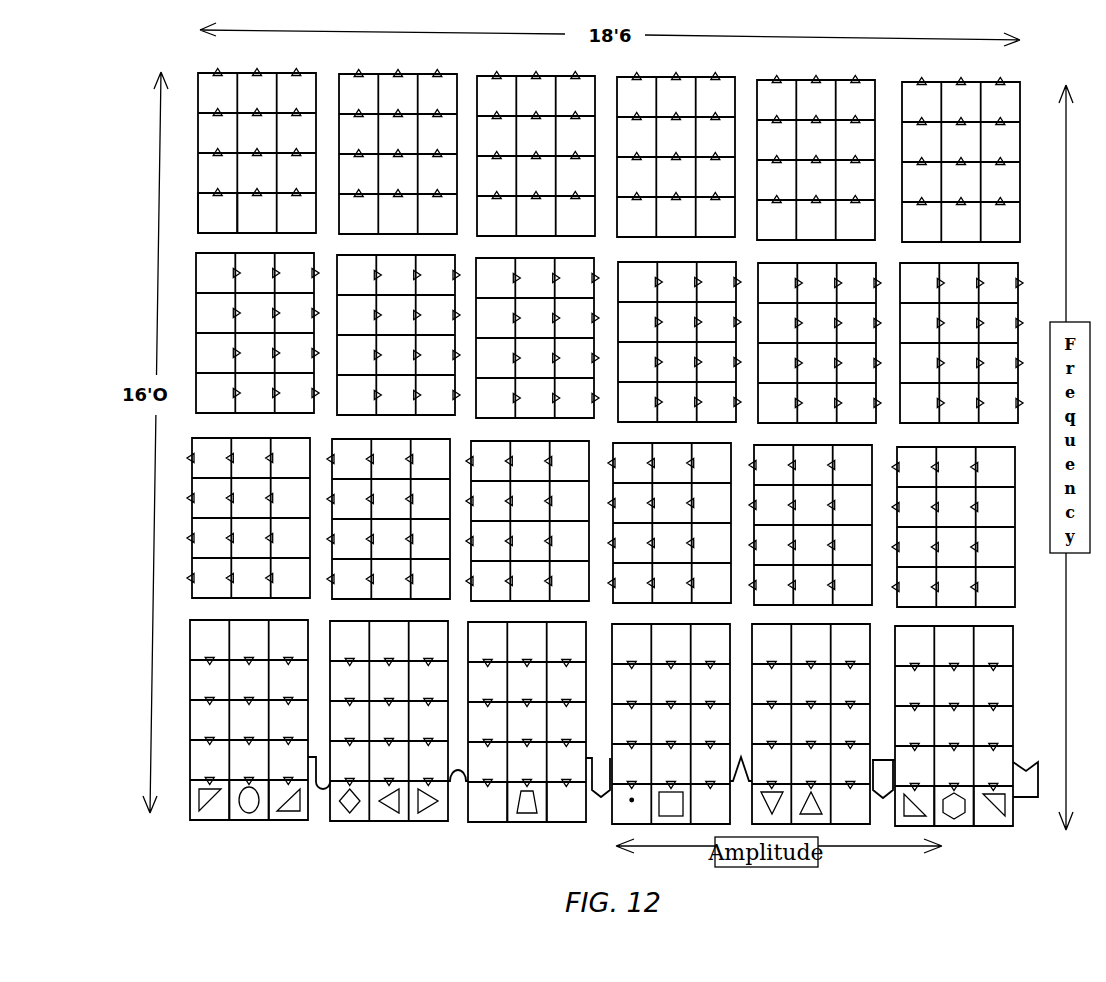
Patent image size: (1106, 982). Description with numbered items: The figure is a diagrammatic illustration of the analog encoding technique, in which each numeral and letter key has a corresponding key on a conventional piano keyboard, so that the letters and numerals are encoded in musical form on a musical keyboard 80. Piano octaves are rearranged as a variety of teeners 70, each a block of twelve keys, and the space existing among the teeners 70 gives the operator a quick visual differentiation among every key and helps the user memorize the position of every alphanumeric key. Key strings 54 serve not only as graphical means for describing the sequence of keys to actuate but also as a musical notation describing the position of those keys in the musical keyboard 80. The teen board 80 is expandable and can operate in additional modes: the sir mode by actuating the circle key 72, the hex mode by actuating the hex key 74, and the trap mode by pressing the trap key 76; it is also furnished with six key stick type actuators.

The key string 54 is at (184, 219).
The teener 70 is at (170, 125).
The circle key 72 is at (255, 833).
The hex key 74 is at (961, 842).
The trap key 76 is at (534, 836).
The musical keyboard 80 is at (360, 872).